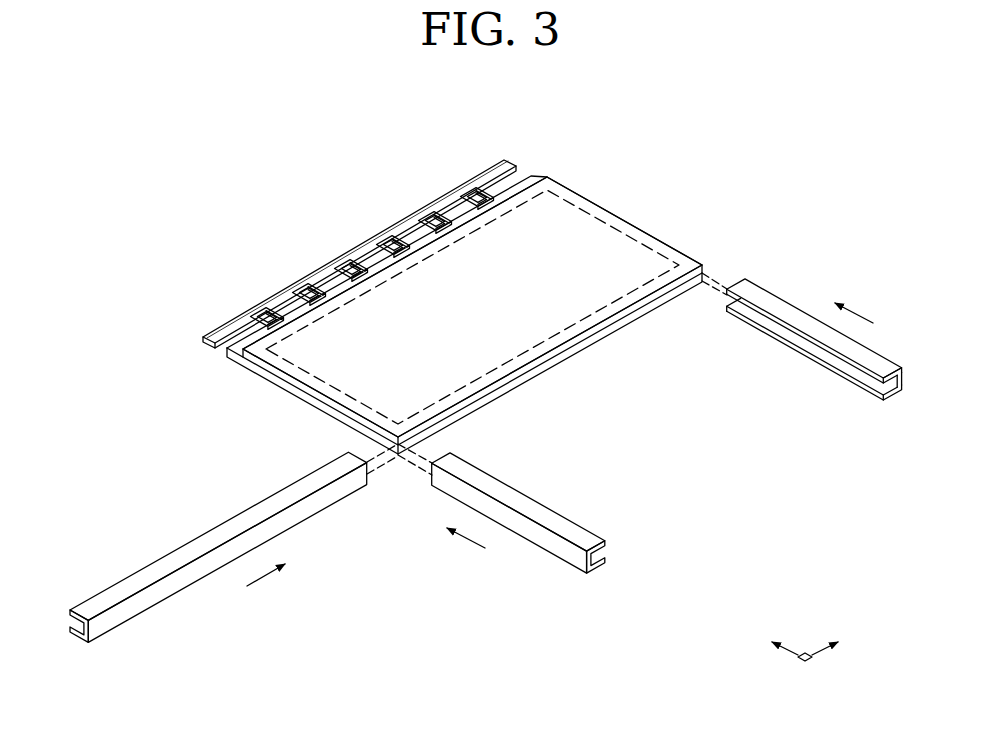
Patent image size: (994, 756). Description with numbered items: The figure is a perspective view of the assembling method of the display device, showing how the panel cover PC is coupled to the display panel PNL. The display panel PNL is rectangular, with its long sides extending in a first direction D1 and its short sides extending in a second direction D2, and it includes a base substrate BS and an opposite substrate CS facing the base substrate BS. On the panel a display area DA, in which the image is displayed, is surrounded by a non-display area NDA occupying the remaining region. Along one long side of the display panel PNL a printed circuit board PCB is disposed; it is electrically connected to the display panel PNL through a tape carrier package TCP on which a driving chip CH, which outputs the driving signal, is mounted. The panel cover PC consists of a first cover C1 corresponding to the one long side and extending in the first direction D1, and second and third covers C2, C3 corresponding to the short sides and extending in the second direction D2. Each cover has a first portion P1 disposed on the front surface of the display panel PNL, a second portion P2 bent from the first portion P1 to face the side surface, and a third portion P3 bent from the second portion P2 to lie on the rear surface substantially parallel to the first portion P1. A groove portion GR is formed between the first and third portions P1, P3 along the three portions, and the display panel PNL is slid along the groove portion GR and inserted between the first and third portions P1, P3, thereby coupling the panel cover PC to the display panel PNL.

The display panel PNL is at (212, 428).
The base substrate BS is at (228, 356).
The opposite substrate CS is at (270, 375).
The display area DA is at (489, 307).
The non-display area NDA is at (427, 250).
The printed circuit board PCB is at (357, 250).
The tape carrier package TCP is at (262, 313).
The driving chip CH is at (307, 283).
The first cover C1 is at (150, 598).
The second cover C2 is at (783, 310).
The third cover C3 is at (553, 542).
The groove portion GR is at (606, 551).
The panel cover PC is at (905, 430).
The first portion P1 is at (880, 391).
The second portion P2 is at (898, 408).
The third portion P3 is at (891, 400).
The first direction D1 is at (843, 644).
The second direction D2 is at (775, 647).